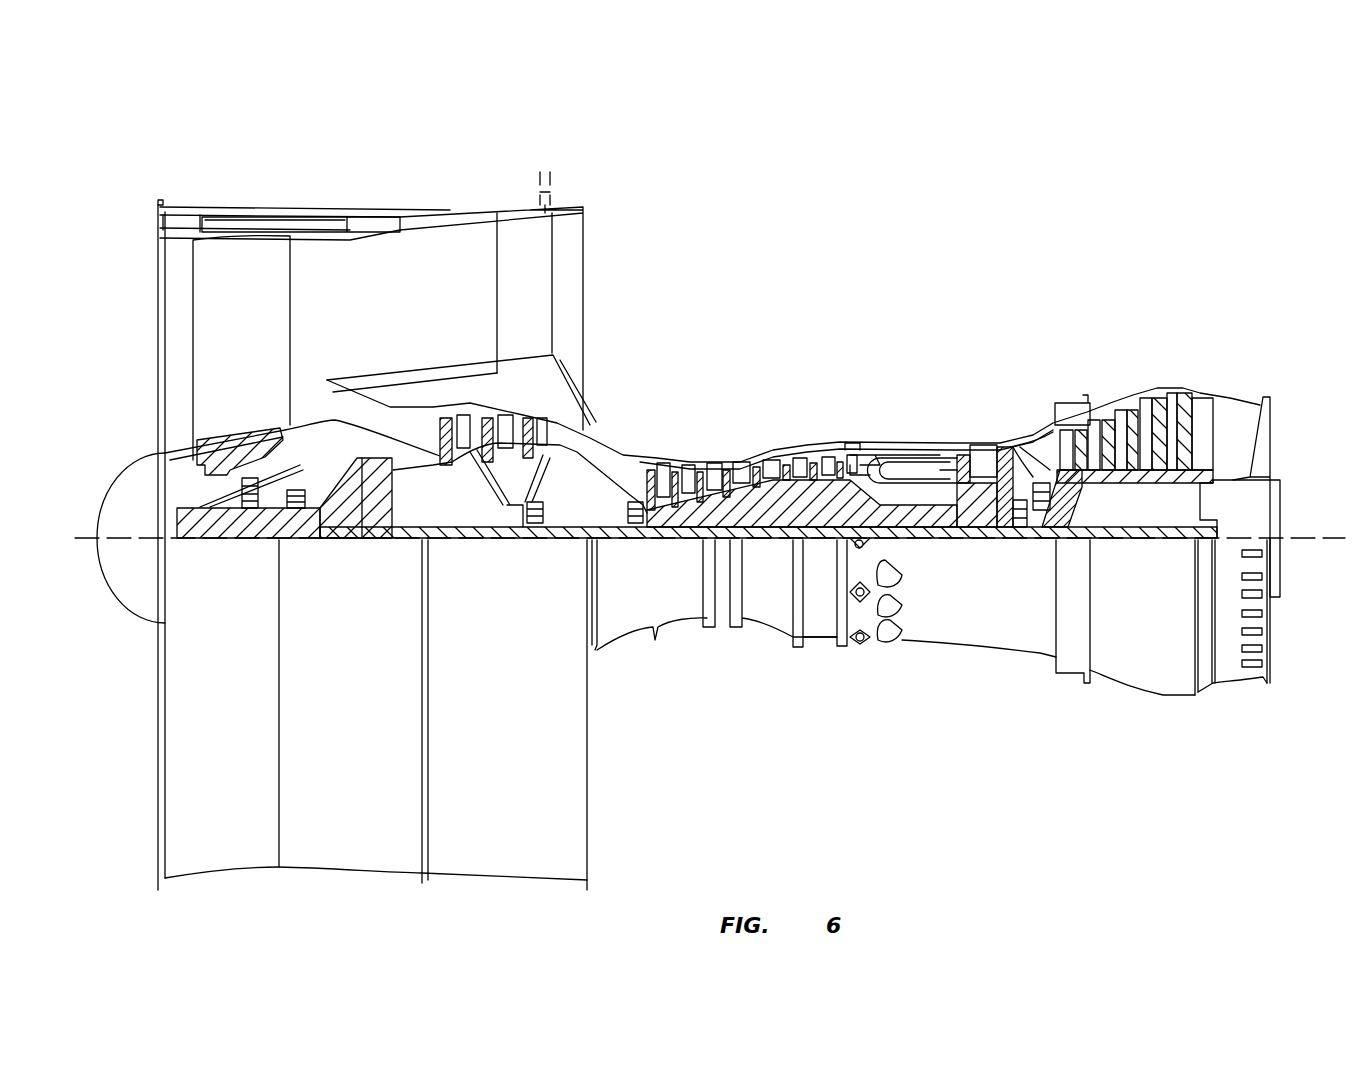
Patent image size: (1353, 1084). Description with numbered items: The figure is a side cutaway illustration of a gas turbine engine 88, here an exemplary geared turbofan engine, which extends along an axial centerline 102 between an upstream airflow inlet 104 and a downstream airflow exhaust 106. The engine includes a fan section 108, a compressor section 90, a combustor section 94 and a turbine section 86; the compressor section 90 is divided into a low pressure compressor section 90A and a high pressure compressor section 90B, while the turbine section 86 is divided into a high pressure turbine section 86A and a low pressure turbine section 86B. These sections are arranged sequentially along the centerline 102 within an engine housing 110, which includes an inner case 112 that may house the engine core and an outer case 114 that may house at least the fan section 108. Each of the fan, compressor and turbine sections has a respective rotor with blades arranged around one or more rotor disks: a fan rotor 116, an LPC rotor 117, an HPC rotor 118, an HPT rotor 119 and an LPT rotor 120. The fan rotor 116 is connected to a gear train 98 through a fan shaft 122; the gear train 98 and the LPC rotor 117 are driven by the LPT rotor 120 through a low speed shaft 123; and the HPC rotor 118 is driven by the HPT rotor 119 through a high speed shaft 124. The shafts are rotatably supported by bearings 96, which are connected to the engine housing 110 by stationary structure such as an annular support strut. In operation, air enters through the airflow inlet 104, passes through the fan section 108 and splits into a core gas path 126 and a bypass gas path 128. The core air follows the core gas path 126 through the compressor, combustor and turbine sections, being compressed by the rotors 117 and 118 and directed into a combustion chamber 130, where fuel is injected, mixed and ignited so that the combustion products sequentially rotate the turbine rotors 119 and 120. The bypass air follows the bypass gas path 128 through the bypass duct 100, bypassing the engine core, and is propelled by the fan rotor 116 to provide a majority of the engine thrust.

The turbine section 86 is at (1225, 298).
The high pressure turbine (HPT) section 86A is at (1035, 362).
The low pressure turbine (LPT) section 86B is at (1225, 362).
The gas turbine engine 88 is at (117, 193).
The compressor section 90 is at (820, 122).
The low pressure compressor (LPC) section 90A is at (590, 168).
The high pressure compressor (HPC) section 90B is at (815, 362).
The combustor section 94 is at (952, 362).
The bearings 96 is at (272, 537).
The gear train 98 is at (372, 535).
The bypass duct 100 is at (413, 222).
The axial centerline 102 is at (1332, 540).
The airflow inlet 104 is at (158, 323).
The airflow exhaust 106 is at (1270, 430).
The fan section 108 is at (337, 190).
The engine housing 110 is at (613, 663).
The inner case 112 is at (818, 640).
The outer case 114 is at (540, 880).
The fan rotor 116 is at (180, 452).
The LPC rotor 117 is at (488, 505).
The HPC rotor 118 is at (783, 505).
The HPT rotor 119 is at (983, 520).
The LPT rotor 120 is at (1145, 497).
The fan shaft 122 is at (229, 532).
The low speed shaft 123 is at (1143, 540).
The high speed shaft 124 is at (922, 530).
The core gas path 126 is at (610, 455).
The bypass gas path 128 is at (406, 315).
The combustion chamber 130 is at (905, 468).